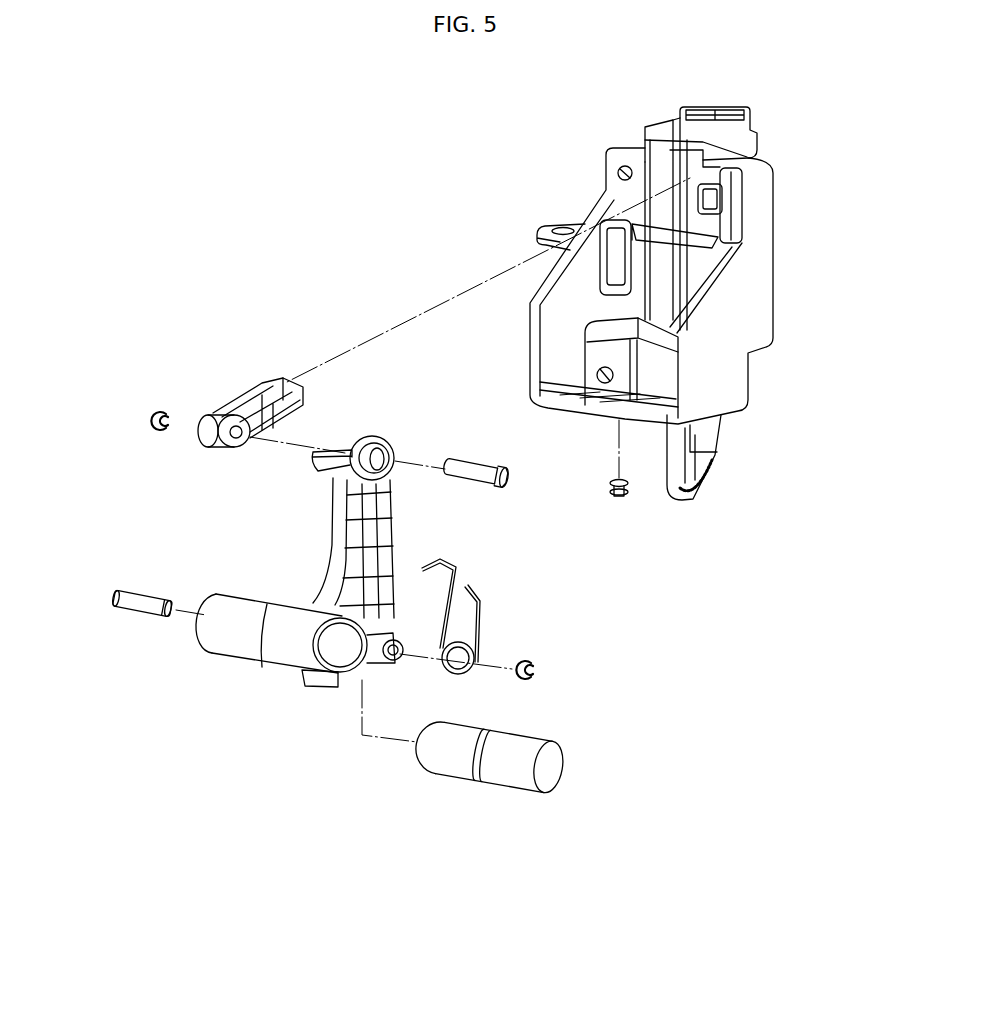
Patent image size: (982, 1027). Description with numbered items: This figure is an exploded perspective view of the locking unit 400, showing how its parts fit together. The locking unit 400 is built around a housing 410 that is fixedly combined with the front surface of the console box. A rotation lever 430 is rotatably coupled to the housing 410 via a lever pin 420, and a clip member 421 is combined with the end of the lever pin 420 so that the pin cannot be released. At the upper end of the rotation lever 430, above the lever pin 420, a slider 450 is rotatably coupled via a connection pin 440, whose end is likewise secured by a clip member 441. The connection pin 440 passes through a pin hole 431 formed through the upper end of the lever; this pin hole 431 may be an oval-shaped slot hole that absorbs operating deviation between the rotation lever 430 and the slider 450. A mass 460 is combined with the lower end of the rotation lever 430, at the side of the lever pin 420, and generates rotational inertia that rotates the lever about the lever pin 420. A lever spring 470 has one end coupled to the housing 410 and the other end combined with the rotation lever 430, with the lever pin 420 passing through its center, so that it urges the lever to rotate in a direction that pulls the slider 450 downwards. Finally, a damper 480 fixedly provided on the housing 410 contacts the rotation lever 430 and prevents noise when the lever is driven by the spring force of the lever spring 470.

The locking unit 400 is at (423, 283).
The housing 410 is at (752, 285).
The lever pin 420 is at (140, 608).
The clip member 421 is at (535, 667).
The rotation lever 430 is at (337, 544).
The pin hole 431 is at (387, 452).
The connection pin 440 is at (468, 476).
The clip member 441 is at (150, 418).
The slider 450 is at (247, 393).
The mass 460 is at (447, 767).
The lever spring 470 is at (477, 630).
The damper 480 is at (619, 498).